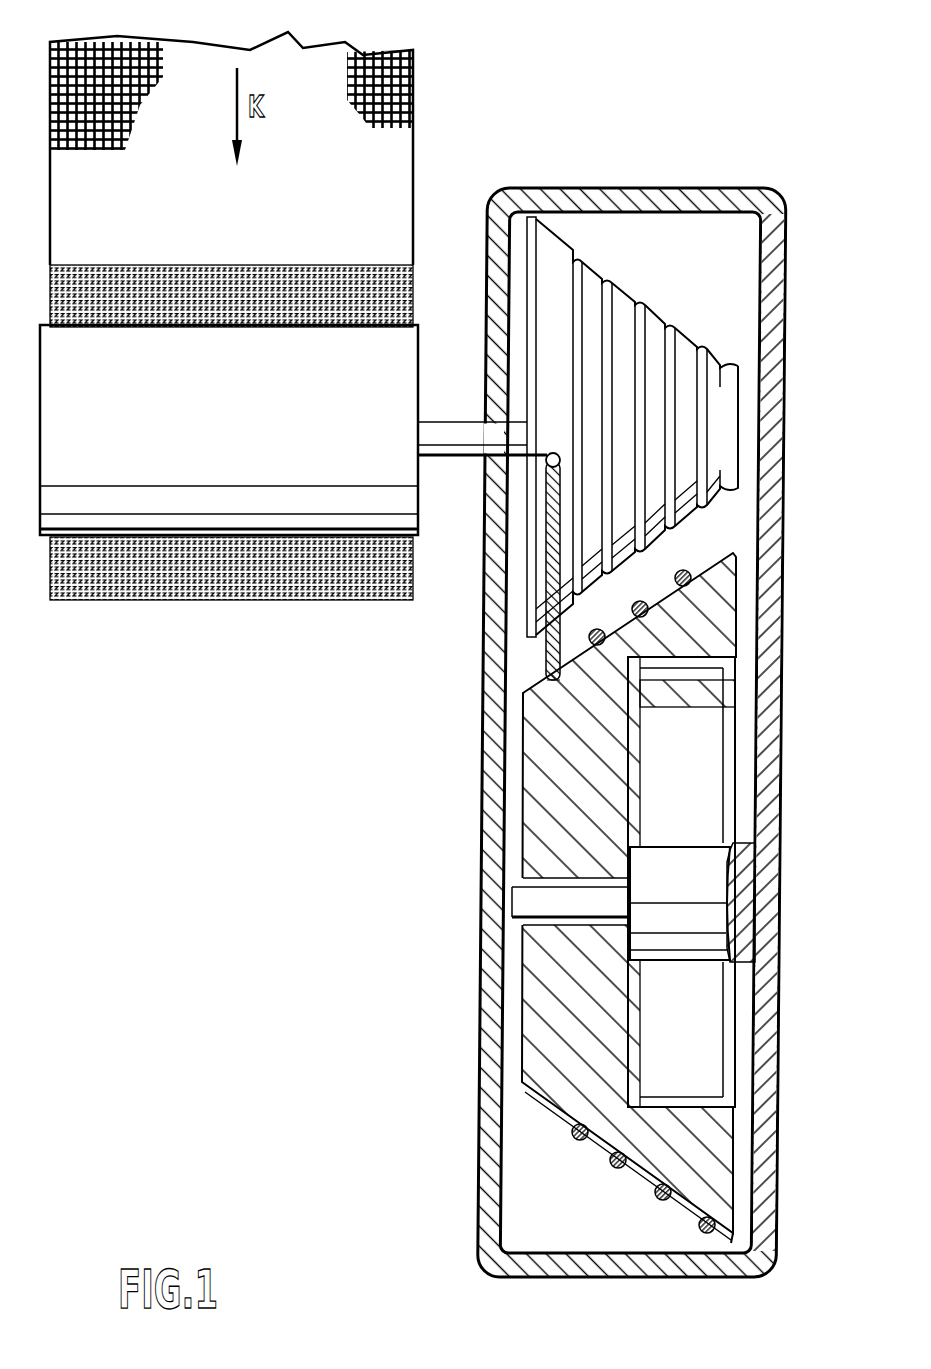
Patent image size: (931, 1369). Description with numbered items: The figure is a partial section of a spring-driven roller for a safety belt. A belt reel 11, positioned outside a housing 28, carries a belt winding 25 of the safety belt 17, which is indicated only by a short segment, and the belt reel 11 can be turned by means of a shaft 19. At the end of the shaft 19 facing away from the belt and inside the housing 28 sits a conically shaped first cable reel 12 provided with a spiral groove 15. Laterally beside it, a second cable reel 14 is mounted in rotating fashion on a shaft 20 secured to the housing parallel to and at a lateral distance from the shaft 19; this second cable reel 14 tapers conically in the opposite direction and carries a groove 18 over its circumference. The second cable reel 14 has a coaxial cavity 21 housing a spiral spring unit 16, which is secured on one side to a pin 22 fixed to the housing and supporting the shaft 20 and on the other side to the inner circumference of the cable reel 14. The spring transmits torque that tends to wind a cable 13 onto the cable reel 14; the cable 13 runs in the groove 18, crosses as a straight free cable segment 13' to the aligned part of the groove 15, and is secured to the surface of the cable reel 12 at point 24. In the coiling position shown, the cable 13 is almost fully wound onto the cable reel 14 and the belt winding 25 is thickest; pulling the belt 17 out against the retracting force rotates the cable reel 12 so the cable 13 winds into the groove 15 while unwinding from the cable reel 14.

The belt reel 11 is at (230, 423).
The cable reel 12 is at (695, 320).
The cable 13 is at (576, 851).
The cable segment 13' is at (478, 686).
The cable reel 14 is at (535, 1040).
The spiral groove 15 is at (637, 298).
The spiral spring unit 16 is at (700, 1047).
The safety belt 17 is at (163, 53).
The groove 18 is at (691, 580).
The shaft 19 is at (452, 420).
The shaft 20 is at (516, 897).
The coaxial cavity 21 is at (715, 1105).
The pin 22 is at (705, 919).
The point 24 is at (545, 462).
The belt winding 25 is at (244, 600).
The housing 28 is at (553, 197).